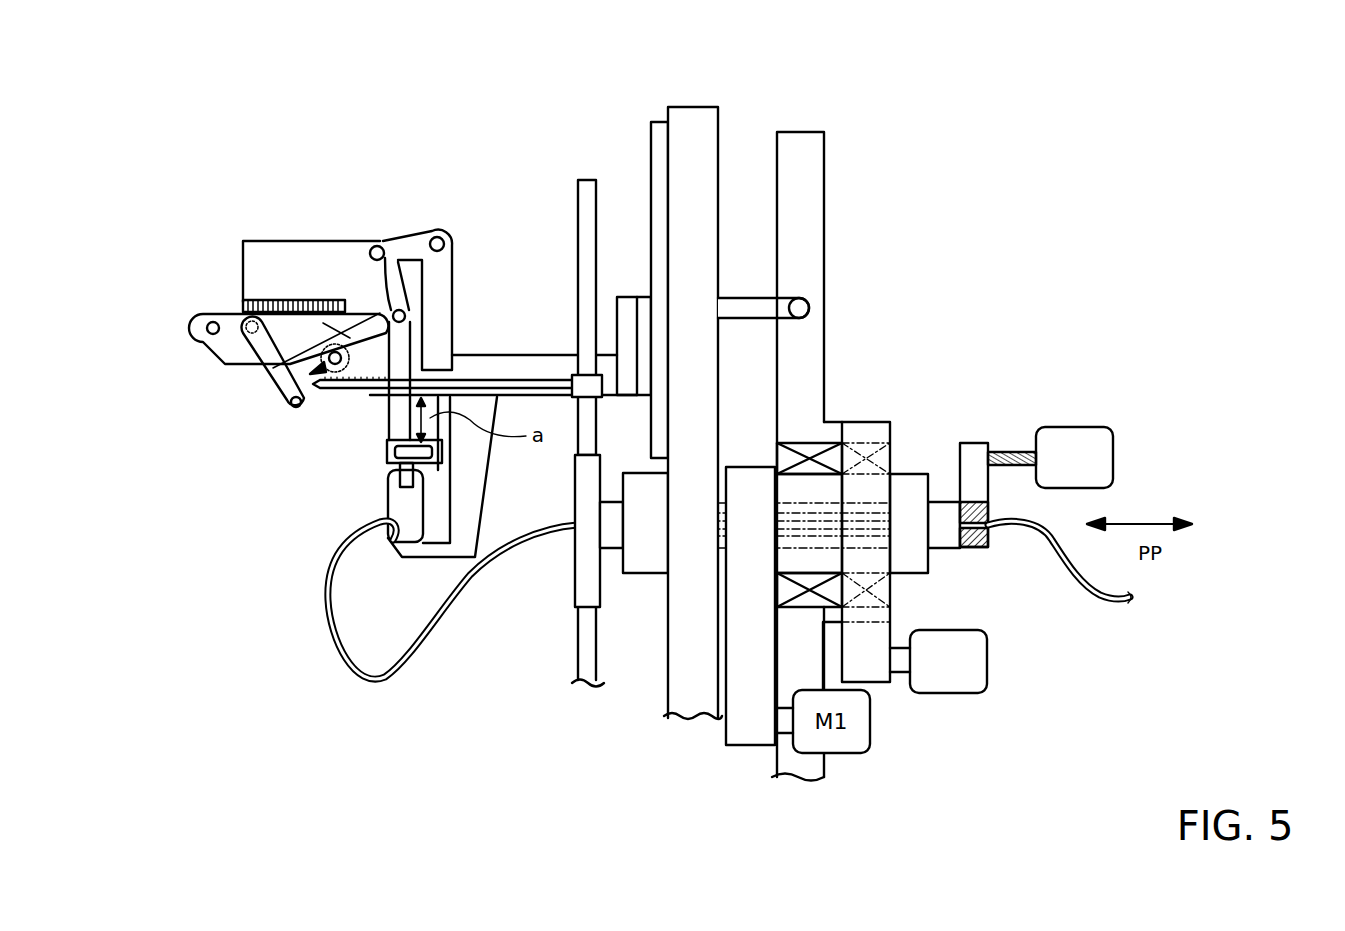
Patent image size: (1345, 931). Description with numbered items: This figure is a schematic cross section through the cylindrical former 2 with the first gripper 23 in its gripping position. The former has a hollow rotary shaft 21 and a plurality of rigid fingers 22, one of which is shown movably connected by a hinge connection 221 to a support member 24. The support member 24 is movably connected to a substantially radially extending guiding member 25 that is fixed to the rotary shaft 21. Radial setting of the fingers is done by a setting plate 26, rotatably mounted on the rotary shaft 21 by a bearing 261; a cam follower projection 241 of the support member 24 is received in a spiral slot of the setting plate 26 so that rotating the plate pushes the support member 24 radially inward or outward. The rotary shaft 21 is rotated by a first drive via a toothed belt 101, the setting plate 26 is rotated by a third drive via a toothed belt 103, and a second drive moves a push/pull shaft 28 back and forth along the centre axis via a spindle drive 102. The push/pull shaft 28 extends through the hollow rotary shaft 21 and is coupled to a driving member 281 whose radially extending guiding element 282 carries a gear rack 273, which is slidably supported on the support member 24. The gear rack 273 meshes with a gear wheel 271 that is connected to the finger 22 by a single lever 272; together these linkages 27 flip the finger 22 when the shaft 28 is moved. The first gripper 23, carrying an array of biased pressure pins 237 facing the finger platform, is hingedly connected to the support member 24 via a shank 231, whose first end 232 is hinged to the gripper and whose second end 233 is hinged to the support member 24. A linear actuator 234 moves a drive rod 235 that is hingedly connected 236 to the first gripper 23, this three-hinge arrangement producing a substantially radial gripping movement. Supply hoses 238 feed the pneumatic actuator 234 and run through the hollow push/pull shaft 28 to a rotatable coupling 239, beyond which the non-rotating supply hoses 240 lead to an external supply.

The cylindrical former 2 is at (1046, 179).
The hollow rotary shaft 21 is at (640, 590).
The finger 22 is at (232, 300).
The hinge connection 221 is at (202, 348).
The first gripper 23 is at (337, 253).
The shank 231 is at (413, 247).
The first end of the shank 232 is at (373, 243).
The second end of the shank 233 is at (444, 238).
The actuator 234 is at (400, 530).
The drive rod 235 is at (398, 353).
The hinged connection 236 is at (408, 313).
The pressure pins 237 is at (277, 300).
The supply hoses 238 is at (350, 660).
The rotatable coupling 239 is at (990, 532).
The support member 24 is at (551, 362).
The cam follower projection 241 is at (750, 318).
The guiding member 25 is at (692, 118).
The setting plate 26 is at (808, 197).
The bearing 261 is at (833, 440).
The linkages 27 is at (282, 427).
The gear wheel 271 is at (318, 415).
The lever 272 is at (273, 375).
The gear rack 273 is at (352, 393).
The push/pull shaft 28 is at (612, 545).
The driving member 281 is at (583, 465).
The guiding element 282 is at (585, 195).
The toothed belt 101 is at (750, 742).
The spindle drive 102 is at (1020, 447).
The toothed belt 103 is at (882, 672).
The supply hoses 240 is at (1112, 608).